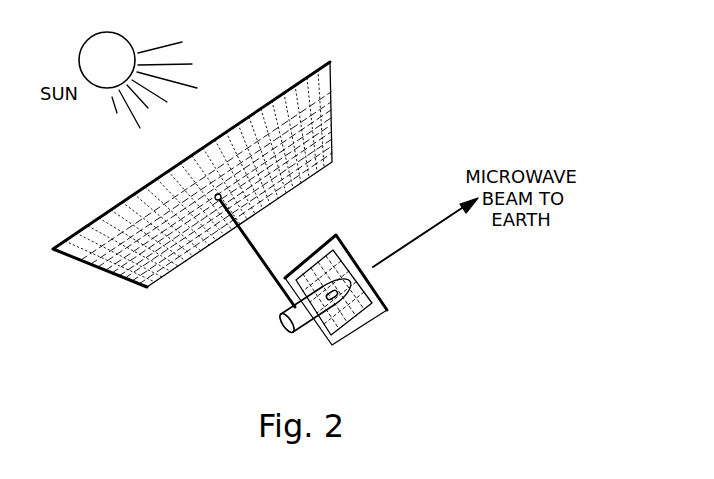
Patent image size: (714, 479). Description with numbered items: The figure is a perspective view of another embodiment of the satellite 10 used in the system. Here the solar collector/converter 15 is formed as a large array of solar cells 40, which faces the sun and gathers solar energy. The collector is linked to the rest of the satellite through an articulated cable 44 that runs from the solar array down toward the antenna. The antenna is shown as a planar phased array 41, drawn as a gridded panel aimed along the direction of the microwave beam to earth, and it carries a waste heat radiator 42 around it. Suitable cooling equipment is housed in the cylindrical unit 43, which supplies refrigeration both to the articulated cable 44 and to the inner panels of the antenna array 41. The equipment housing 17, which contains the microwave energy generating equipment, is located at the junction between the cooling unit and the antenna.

The satellite 10 is at (228, 311).
The solar collector/converter 15 is at (358, 80).
The equipment housing 17 is at (329, 302).
The array of solar cells 40 is at (320, 117).
The planar phased array 41 is at (338, 272).
The waste heat radiator 42 is at (375, 313).
The cooling equipment housing 43 is at (283, 328).
The articulated cable 44 is at (260, 253).